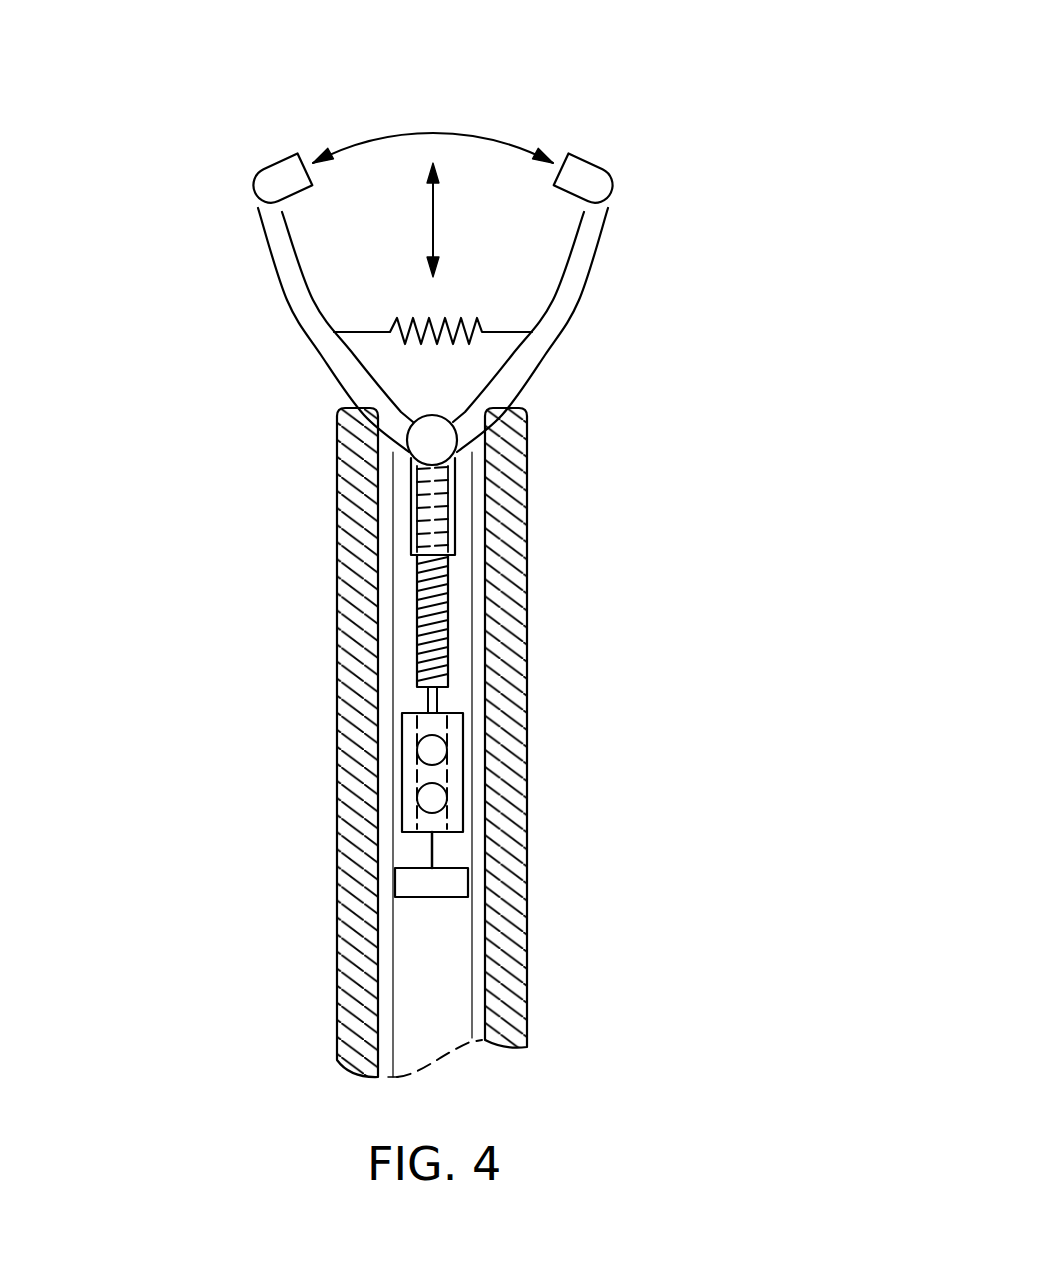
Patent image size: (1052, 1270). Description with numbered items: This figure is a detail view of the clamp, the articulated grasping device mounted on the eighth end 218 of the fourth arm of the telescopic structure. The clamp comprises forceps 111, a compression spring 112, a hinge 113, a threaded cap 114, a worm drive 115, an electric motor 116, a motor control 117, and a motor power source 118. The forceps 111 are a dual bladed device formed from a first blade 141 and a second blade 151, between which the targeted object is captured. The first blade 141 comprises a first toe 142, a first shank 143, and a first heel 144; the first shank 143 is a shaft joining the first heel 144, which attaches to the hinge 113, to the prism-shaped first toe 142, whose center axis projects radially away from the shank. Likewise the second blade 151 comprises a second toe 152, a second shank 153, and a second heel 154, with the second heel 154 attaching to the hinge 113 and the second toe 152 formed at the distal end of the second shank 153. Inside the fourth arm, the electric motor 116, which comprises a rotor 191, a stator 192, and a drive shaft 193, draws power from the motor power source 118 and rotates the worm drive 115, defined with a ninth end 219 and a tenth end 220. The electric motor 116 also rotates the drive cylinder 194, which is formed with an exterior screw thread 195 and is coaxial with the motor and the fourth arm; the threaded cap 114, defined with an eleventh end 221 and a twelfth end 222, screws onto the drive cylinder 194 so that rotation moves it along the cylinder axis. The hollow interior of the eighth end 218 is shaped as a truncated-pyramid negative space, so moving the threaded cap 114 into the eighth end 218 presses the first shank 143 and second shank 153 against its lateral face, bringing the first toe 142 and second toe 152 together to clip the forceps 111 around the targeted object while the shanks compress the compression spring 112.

The forceps 111 is at (765, 195).
The compression spring 112 is at (463, 318).
The hinge 113 is at (432, 440).
The threaded cap 114 is at (455, 517).
The worm drive 115 is at (447, 612).
The electric motor 116 is at (463, 753).
The motor control 117 is at (468, 882).
The motor power source 118 is at (443, 802).
The first blade 141 is at (253, 173).
The first toe 142 is at (290, 173).
The first shank 143 is at (268, 263).
The first heel 144 is at (412, 423).
The second blade 151 is at (573, 157).
The second toe 152 is at (595, 187).
The second shank 153 is at (597, 247).
The second heel 154 is at (454, 418).
The rotor 191 is at (415, 720).
The stator 192 is at (420, 778).
The drive shaft 193 is at (427, 700).
The drive cylinder 194 is at (418, 606).
The exterior screw thread 195 is at (418, 652).
The eighth end 218 is at (335, 400).
The ninth end 219 is at (447, 687).
The tenth end 220 is at (412, 556).
The eleventh end 221 is at (412, 530).
The twelfth end 222 is at (455, 460).